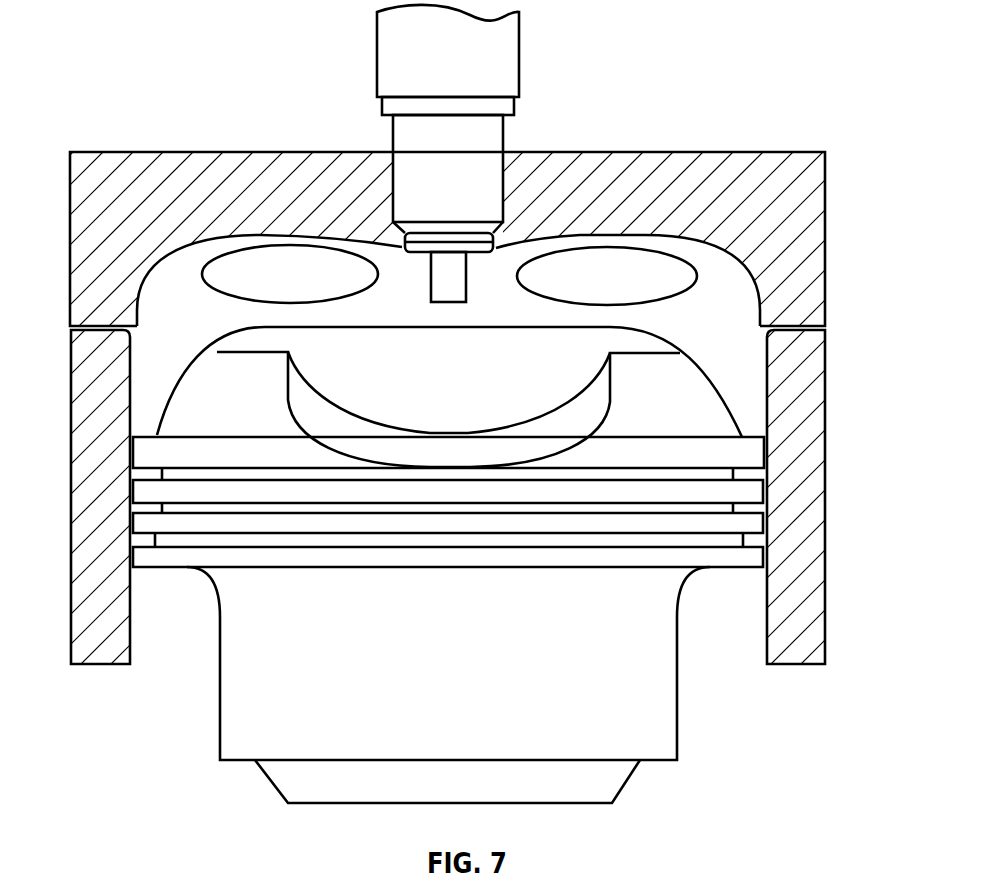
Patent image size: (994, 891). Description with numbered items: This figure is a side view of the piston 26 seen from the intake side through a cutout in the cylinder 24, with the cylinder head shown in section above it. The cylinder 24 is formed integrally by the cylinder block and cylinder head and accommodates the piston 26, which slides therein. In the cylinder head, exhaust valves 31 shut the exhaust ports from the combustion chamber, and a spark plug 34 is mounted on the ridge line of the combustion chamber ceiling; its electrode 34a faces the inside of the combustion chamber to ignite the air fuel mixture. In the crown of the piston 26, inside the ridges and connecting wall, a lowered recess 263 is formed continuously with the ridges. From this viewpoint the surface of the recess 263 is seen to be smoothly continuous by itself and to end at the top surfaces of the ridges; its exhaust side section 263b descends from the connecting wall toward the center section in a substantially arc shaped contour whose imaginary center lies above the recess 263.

The cylinder 24 is at (742, 625).
The piston 26 is at (503, 565).
The exhaust valve 31 is at (268, 272).
The spark plug 34 is at (482, 153).
The electrode 34a is at (446, 268).
The lowered recess 263 is at (448, 409).
The exhaust side section 263b is at (446, 435).